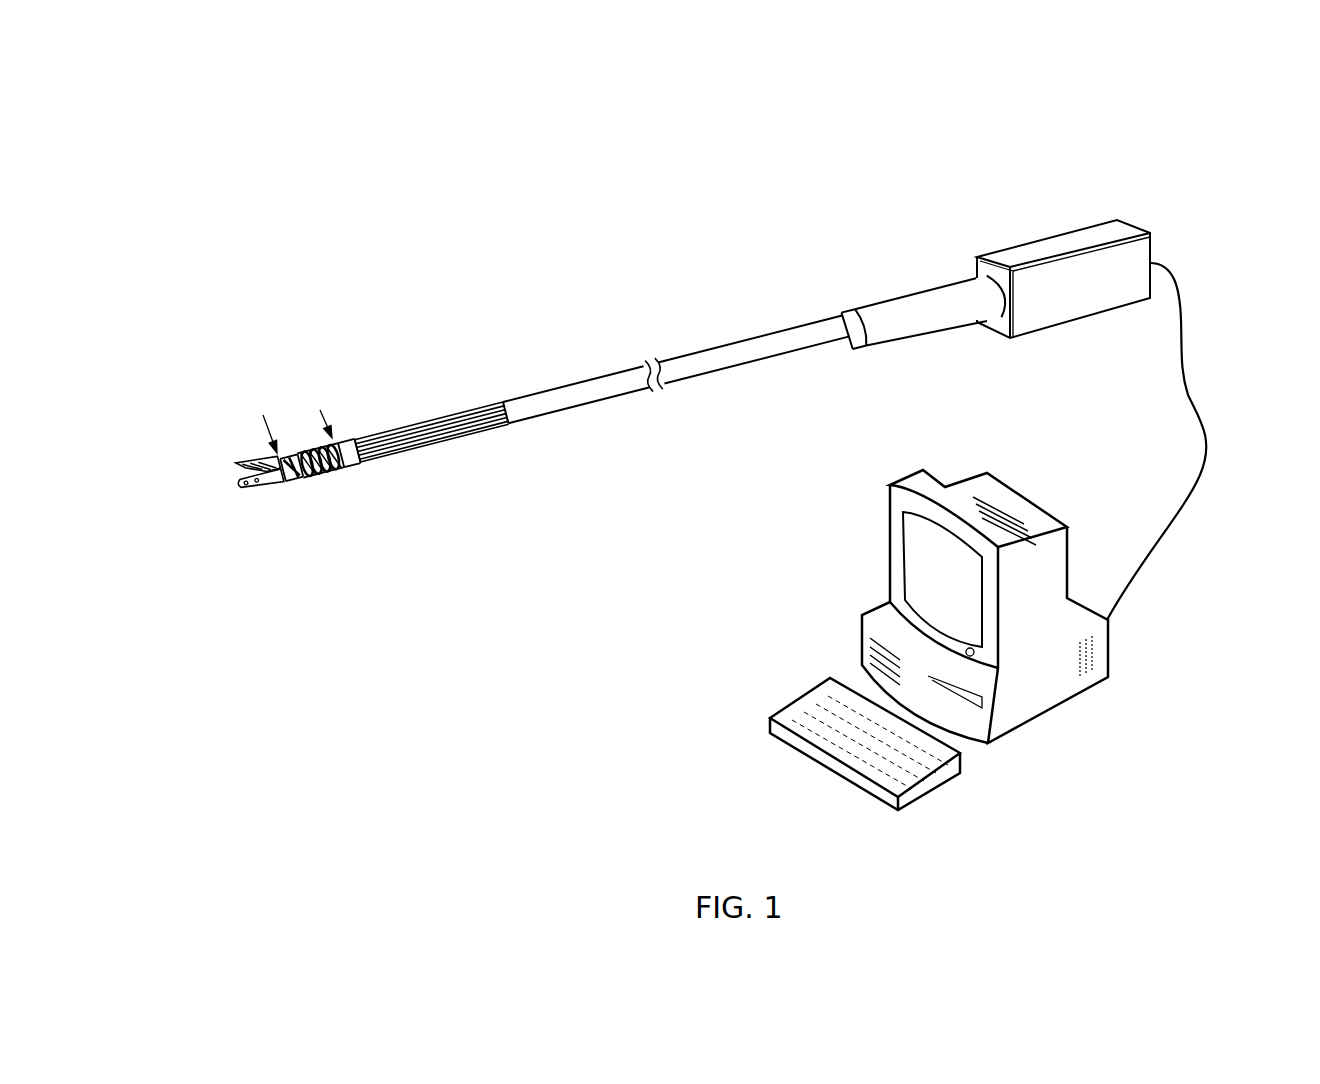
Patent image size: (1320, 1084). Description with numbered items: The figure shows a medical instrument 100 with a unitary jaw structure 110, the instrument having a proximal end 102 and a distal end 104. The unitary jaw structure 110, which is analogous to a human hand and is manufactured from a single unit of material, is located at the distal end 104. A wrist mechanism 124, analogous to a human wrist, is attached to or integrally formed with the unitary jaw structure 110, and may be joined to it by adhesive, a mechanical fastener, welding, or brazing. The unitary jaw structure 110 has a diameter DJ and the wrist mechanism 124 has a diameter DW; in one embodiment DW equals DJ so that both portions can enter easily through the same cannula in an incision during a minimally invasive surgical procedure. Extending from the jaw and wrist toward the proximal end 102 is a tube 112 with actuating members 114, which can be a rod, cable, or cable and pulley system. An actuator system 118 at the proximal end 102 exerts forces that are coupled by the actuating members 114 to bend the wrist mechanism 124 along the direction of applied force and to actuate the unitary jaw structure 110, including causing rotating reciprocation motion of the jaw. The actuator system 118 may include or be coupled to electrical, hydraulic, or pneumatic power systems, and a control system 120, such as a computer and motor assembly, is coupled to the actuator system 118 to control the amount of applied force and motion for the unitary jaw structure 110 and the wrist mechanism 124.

The medical instrument 100 is at (648, 390).
The proximal end 102 is at (1197, 249).
The distal end 104 is at (223, 477).
The unitary jaw structure 110 is at (248, 443).
The tube 112 is at (512, 398).
The actuating members 114 is at (410, 460).
The actuator system 118 is at (991, 252).
The control system 120 is at (923, 470).
The wrist mechanism 124 is at (303, 435).
The diameter of the unitary jaw structure DJ is at (288, 488).
The diameter of the wrist mechanism DW is at (342, 472).